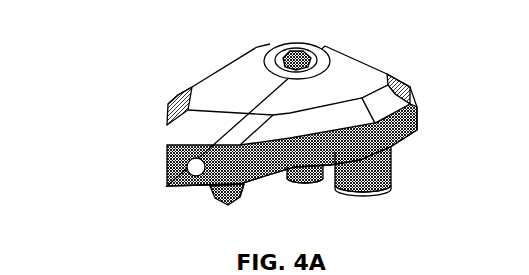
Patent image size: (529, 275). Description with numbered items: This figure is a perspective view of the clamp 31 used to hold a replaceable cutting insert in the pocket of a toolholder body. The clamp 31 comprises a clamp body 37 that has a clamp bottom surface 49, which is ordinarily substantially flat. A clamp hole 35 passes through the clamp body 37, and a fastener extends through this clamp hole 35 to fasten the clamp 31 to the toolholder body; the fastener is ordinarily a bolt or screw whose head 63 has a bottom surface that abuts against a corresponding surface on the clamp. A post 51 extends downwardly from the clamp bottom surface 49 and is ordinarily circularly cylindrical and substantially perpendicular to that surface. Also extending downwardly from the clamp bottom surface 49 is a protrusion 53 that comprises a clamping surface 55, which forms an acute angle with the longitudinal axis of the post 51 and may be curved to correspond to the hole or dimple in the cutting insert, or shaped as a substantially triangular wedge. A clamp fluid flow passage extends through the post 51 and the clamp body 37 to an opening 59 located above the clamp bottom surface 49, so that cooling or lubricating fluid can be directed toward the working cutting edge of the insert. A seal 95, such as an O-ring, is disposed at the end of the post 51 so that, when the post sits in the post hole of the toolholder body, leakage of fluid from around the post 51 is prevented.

The clamp 31 is at (102, 102).
The clamp hole 35 is at (264, 62).
The head 63 is at (298, 177).
The clamp body 37 is at (401, 96).
The post 51 is at (395, 168).
The opening 59 is at (189, 164).
The protrusion 53 is at (224, 204).
The clamping surface 55 is at (241, 193).
The clamp bottom surface 49 is at (273, 171).
The seal 95 is at (371, 197).